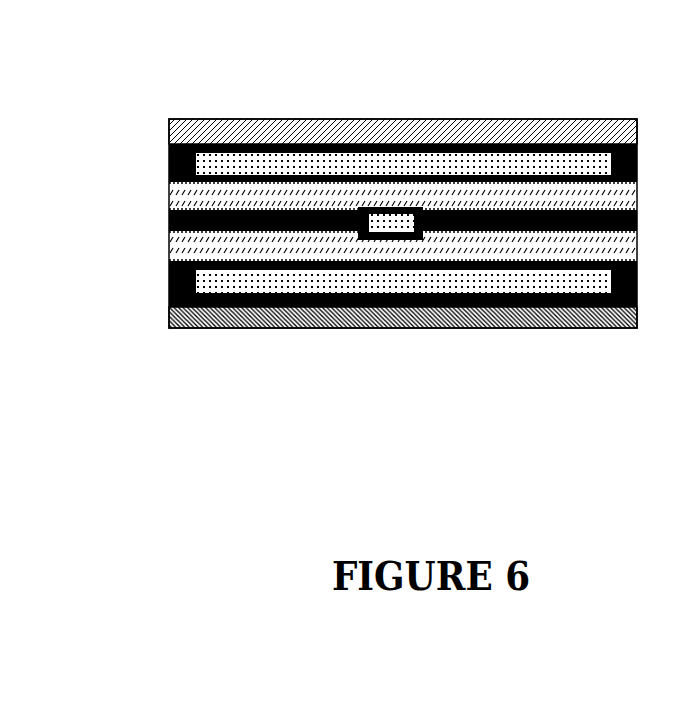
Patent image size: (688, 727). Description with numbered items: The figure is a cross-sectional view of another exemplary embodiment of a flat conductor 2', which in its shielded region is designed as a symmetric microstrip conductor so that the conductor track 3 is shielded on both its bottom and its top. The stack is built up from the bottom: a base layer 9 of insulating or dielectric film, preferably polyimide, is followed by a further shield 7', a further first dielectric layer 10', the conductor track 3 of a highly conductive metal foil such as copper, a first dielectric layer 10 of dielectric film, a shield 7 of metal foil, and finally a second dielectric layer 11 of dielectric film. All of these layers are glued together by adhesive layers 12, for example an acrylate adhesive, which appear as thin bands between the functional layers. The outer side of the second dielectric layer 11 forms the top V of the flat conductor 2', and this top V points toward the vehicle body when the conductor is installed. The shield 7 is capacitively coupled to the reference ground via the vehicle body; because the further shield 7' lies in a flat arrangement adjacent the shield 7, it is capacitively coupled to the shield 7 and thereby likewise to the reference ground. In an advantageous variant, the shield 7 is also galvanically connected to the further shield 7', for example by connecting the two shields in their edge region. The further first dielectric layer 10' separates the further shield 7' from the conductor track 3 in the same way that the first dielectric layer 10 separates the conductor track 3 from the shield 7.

The flat conductor 2' is at (337, 194).
The conductor track 3 is at (385, 220).
The shield 7 is at (403, 121).
The further shield 7' is at (403, 337).
The base layer 9 is at (188, 317).
The first dielectric layer 10 is at (403, 126).
The further first dielectric layer 10' is at (403, 318).
The second dielectric layer 11 is at (437, 135).
The adhesive layers 12 is at (585, 143).
The top V is at (317, 115).